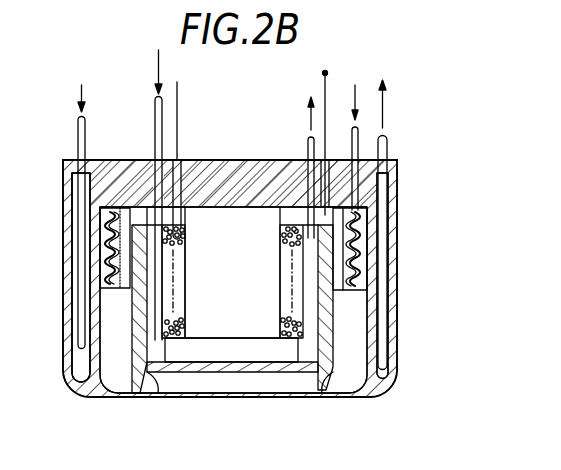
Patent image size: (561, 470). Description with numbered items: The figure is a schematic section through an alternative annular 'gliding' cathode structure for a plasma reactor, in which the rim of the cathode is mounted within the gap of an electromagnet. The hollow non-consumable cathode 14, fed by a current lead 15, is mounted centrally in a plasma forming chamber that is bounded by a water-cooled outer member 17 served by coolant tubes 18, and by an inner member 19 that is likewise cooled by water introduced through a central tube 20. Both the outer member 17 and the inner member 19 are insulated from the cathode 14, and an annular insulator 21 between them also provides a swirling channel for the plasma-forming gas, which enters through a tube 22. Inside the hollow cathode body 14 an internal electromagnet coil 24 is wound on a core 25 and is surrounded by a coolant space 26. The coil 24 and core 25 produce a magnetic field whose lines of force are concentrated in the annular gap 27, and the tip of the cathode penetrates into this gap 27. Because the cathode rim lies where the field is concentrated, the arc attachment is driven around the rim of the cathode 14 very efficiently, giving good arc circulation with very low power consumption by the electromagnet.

The hollow non-consumable cathode 14 is at (340, 400).
The current lead 15 is at (324, 73).
The water-cooled outer member 17 is at (63, 279).
The coolant tubes 18 is at (77, 131).
The inner member 19 is at (232, 373).
The central tube 20 is at (154, 131).
The annular insulator 21 is at (362, 243).
The tube 22 is at (358, 132).
The electromagnet coil 24 is at (163, 313).
The core 25 is at (244, 291).
The coolant space 26 is at (305, 318).
The annular gap 27 is at (147, 394).